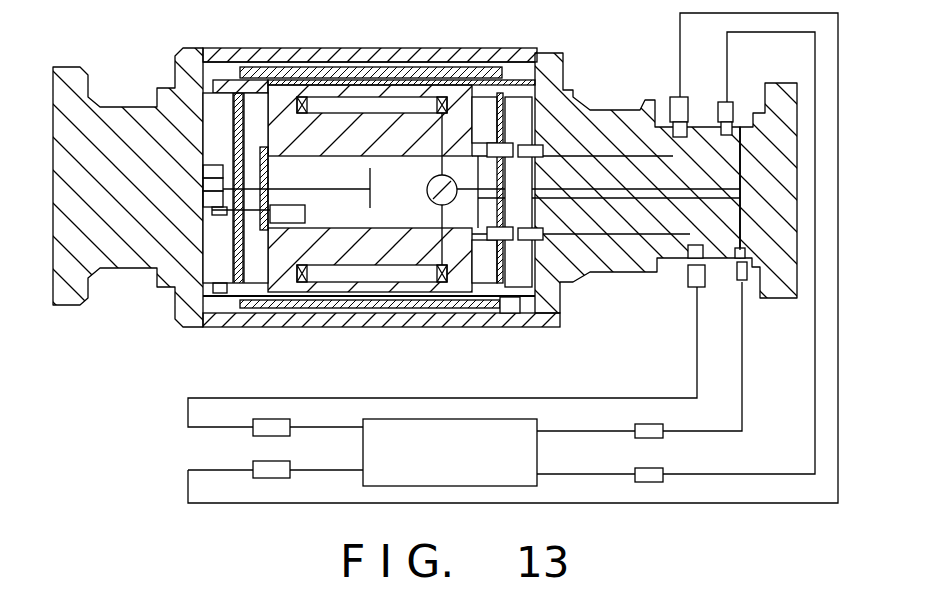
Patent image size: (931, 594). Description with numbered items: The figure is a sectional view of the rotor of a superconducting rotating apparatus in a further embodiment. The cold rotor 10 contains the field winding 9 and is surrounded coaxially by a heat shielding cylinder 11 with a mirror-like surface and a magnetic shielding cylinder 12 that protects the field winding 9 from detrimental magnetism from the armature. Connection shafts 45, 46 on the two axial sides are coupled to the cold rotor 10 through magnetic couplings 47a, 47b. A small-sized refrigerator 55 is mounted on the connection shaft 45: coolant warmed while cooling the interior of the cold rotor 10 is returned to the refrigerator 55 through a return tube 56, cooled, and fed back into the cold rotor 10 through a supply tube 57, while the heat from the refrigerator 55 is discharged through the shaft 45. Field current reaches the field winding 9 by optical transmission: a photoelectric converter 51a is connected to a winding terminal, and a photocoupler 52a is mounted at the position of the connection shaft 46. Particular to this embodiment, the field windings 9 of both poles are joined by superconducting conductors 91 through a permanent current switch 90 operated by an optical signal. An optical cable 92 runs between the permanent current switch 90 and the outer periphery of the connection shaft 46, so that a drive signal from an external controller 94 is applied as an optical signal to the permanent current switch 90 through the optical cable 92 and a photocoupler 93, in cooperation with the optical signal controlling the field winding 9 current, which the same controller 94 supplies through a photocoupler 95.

The field winding 9 is at (392, 90).
The cold rotor 10 is at (285, 77).
The heat shielding cylinder 11 is at (347, 72).
The magnetic shielding cylinder 12 is at (225, 48).
The connection shaft 45 is at (123, 268).
The connection shaft 46 is at (797, 100).
The magnetic coupling 47a is at (222, 302).
The magnetic coupling 47b is at (513, 302).
The photoelectric converter 51a is at (477, 97).
The photocoupler 52a is at (537, 110).
The refrigerator 55 is at (213, 165).
The return tube 56 is at (307, 212).
The supply tube 57 is at (368, 177).
The permanent current switch 90 is at (430, 198).
The superconducting conductor 91 is at (433, 180).
The optical cable 92 is at (745, 228).
The photocoupler 93 is at (733, 278).
The controller 94 is at (538, 452).
The photocoupler 95 is at (690, 98).